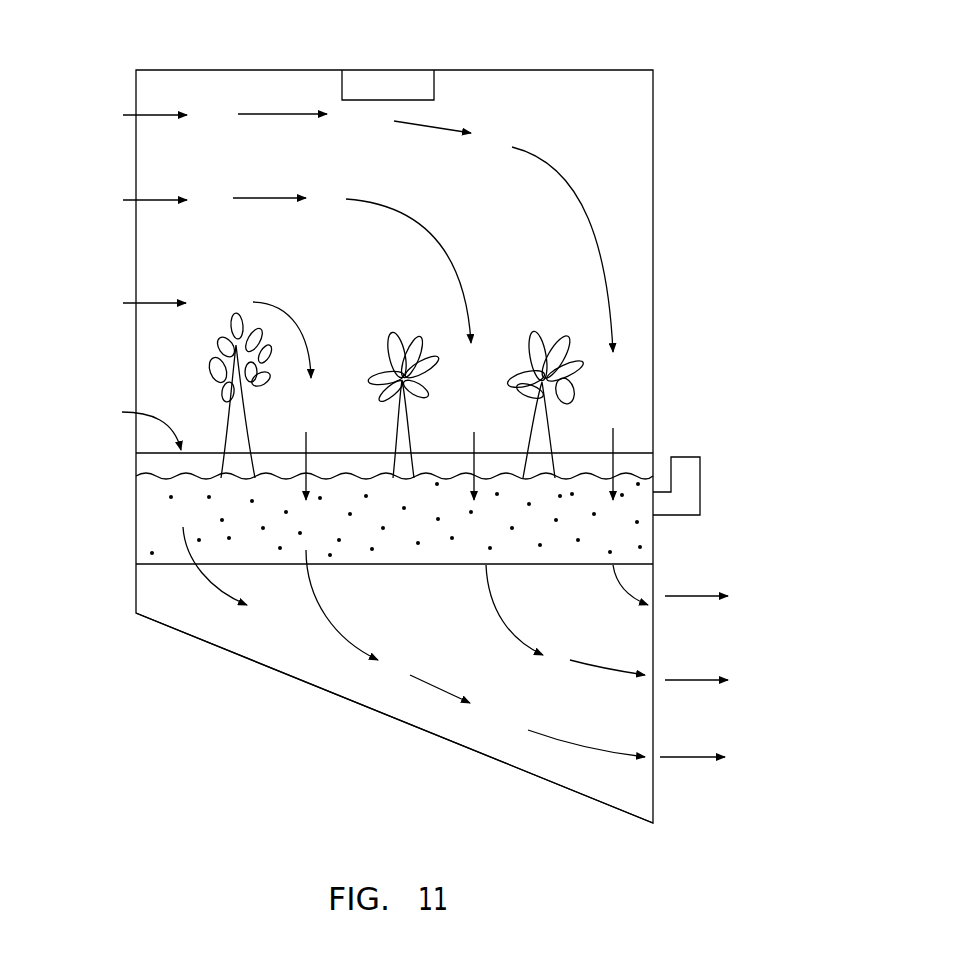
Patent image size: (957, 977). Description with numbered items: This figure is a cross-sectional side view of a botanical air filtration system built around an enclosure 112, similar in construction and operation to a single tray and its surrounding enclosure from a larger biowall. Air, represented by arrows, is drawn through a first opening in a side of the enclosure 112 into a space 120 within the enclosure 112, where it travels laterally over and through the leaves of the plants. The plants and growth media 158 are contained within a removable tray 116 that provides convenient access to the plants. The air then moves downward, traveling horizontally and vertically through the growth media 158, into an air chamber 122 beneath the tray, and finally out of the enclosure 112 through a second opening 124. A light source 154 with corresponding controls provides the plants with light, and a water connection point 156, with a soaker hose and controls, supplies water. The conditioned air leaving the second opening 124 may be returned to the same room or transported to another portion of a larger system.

The enclosure 112 is at (654, 184).
The light source 154 is at (393, 86).
The space 120 is at (226, 147).
The removable tray 116 is at (632, 450).
The growth media 158 is at (160, 533).
The water connection point 156 is at (690, 488).
The air chamber 122 is at (292, 652).
The second opening 124 is at (653, 658).